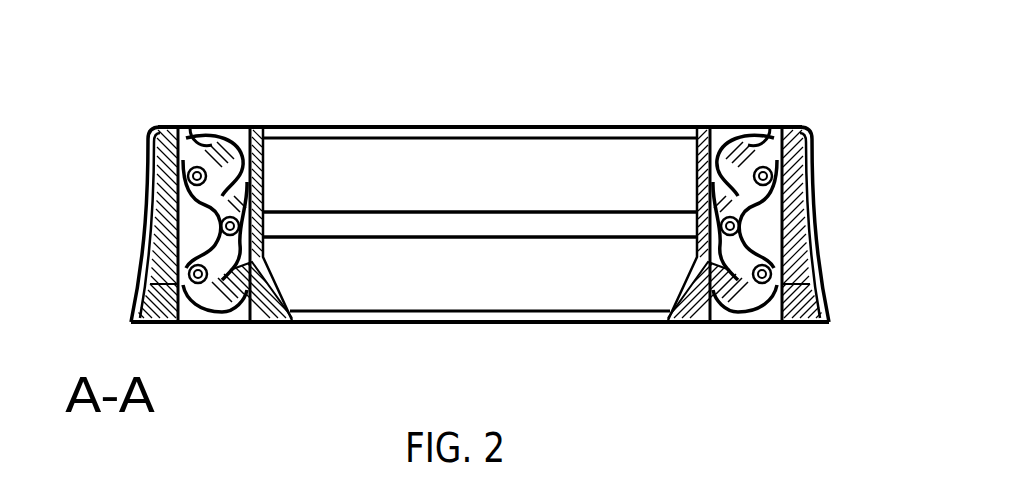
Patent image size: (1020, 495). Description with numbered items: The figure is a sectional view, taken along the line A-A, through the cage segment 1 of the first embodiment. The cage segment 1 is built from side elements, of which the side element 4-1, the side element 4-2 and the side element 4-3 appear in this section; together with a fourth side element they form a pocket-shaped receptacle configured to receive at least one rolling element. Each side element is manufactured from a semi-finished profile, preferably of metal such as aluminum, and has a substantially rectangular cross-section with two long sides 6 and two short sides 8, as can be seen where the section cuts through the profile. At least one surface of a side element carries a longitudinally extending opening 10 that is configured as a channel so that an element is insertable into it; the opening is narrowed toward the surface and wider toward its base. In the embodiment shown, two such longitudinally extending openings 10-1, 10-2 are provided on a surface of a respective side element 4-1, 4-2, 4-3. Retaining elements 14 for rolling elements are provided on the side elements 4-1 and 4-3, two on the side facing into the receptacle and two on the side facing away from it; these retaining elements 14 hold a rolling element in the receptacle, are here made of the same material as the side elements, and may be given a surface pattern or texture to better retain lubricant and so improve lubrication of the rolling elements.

The cage segment 1 is at (830, 70).
The side element 4-1 is at (210, 127).
The side element 4-2 is at (477, 141).
The side element 4-3 is at (760, 323).
The long side 6 is at (812, 178).
The short side 8 is at (739, 127).
The longitudinally extending opening 10 is at (148, 236).
The longitudinally extending opening 10-1 is at (263, 170).
The longitudinally extending opening 10-2 is at (264, 263).
The retaining element 14 is at (145, 301).